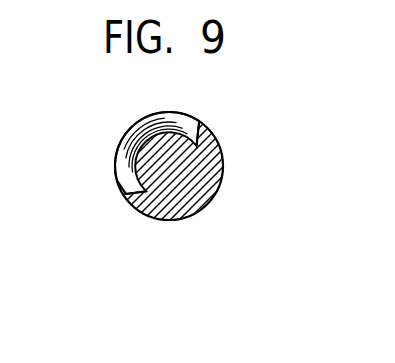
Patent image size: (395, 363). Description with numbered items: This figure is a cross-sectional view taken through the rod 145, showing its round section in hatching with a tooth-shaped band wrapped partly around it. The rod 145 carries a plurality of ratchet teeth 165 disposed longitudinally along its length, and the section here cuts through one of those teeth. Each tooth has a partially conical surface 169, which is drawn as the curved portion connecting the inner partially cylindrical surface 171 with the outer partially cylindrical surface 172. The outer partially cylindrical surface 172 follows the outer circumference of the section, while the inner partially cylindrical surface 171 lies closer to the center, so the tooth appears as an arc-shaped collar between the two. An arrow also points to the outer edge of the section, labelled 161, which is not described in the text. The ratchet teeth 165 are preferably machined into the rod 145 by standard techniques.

The rod 145 is at (207, 207).
The outer surface of rod 161 is at (223, 160).
The ratchet teeth 165 is at (183, 112).
The partially conical surface 169 is at (127, 163).
The inner partially cylindrical surface 171 is at (140, 177).
The outer partially cylindrical surface 172 is at (140, 123).